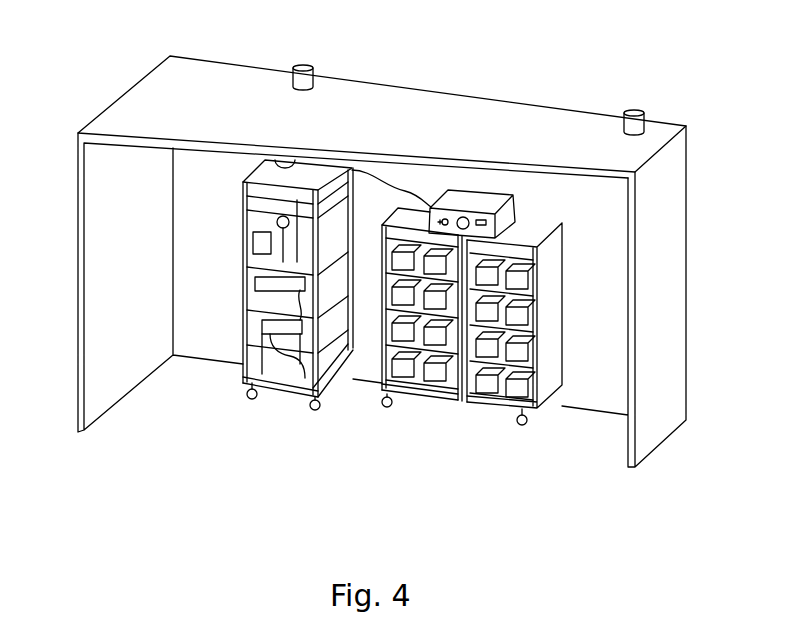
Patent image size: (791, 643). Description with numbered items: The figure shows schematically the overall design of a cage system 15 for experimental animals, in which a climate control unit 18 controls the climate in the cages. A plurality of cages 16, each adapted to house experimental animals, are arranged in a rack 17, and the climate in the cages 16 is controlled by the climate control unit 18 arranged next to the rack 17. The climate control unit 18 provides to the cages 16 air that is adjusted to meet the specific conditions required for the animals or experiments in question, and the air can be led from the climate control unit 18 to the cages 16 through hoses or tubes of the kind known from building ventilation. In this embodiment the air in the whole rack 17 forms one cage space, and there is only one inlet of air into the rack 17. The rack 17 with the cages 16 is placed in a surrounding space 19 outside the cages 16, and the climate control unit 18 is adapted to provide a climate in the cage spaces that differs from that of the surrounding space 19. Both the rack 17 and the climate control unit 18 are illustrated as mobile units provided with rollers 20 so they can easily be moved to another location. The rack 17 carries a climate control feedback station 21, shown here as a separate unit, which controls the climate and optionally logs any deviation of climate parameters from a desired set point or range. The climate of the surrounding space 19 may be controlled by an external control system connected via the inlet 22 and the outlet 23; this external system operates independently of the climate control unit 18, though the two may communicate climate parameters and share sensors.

The cage system 15 is at (309, 485).
The cages 16 is at (518, 383).
The rack 17 is at (547, 377).
The climate control unit 18 is at (268, 408).
The surrounding space 19 is at (165, 449).
The rollers 20 is at (318, 410).
The climate control feedback station 21 is at (477, 203).
The inlet 22 is at (312, 66).
The outlet 23 is at (633, 112).